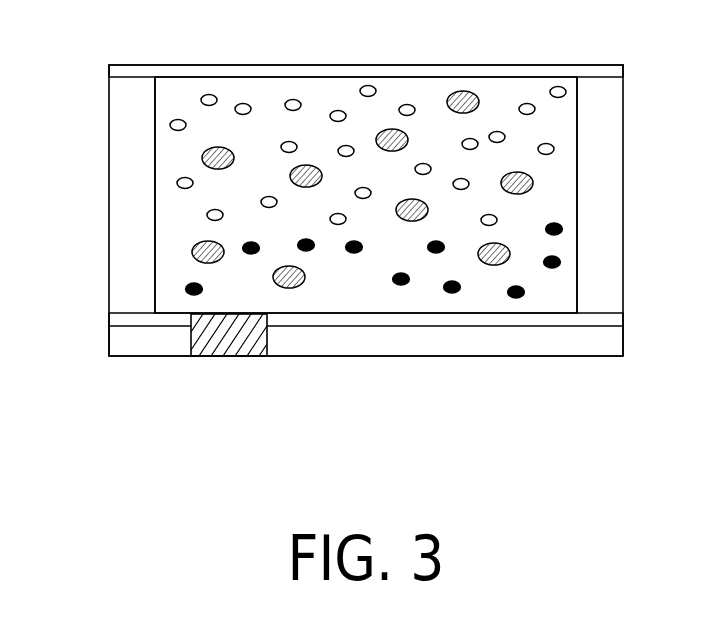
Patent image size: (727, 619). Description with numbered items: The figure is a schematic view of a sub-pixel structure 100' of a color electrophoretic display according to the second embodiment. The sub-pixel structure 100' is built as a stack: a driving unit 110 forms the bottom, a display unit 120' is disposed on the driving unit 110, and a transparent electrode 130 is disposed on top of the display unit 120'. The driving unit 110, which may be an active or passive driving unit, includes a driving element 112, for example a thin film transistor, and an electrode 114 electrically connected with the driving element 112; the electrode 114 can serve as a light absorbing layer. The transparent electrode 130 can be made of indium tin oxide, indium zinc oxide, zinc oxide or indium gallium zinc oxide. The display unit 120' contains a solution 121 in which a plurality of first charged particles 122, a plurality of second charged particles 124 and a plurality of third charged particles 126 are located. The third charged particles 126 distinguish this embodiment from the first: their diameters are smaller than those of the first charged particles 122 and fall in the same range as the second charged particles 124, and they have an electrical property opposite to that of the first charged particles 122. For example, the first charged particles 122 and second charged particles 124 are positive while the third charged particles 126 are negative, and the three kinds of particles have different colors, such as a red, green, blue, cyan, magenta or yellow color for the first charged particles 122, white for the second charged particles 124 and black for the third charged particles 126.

The sub-pixel structure 100' is at (398, 244).
The driving unit 110 is at (207, 437).
The driving element 112 is at (225, 357).
The electrode 114 is at (310, 320).
The display unit 120' is at (292, 195).
The solution 121 is at (172, 142).
The first charged particles 122 is at (219, 148).
The second charged particles 124 is at (339, 114).
The third charged particles 126 is at (189, 286).
The transparent electrode 130 is at (109, 72).